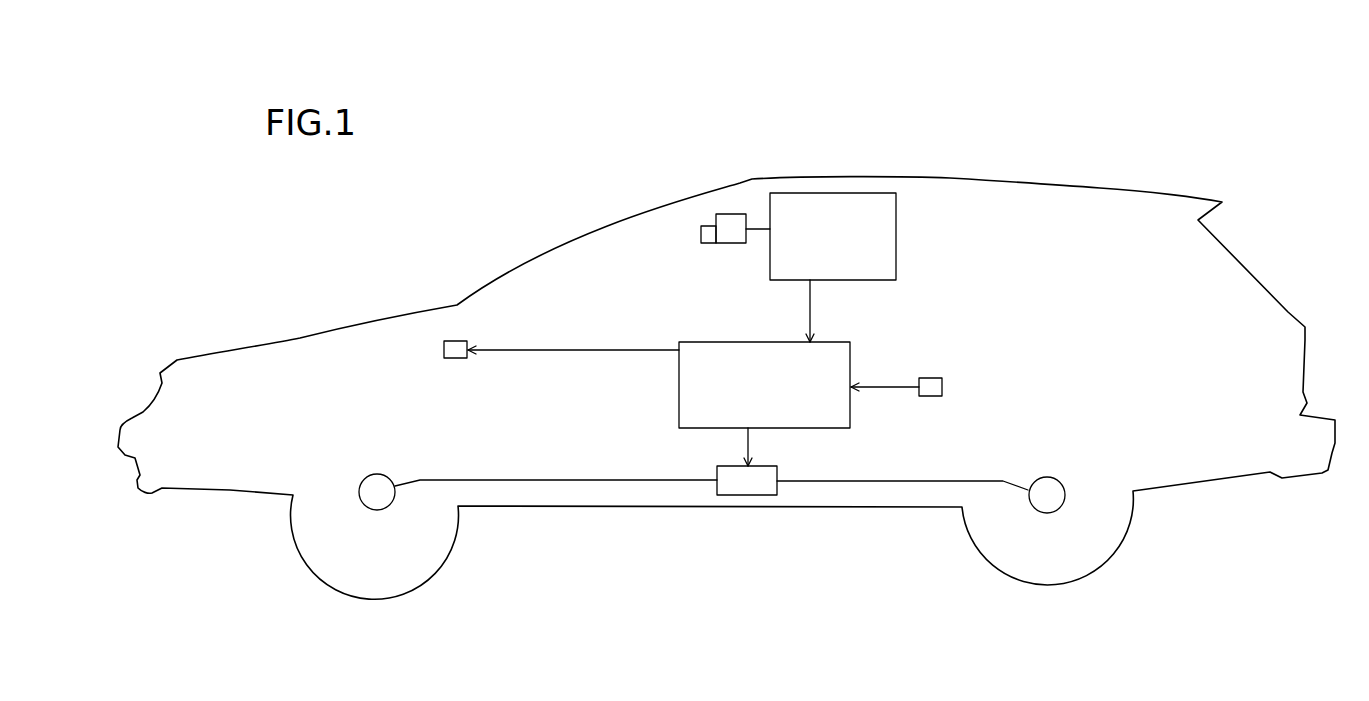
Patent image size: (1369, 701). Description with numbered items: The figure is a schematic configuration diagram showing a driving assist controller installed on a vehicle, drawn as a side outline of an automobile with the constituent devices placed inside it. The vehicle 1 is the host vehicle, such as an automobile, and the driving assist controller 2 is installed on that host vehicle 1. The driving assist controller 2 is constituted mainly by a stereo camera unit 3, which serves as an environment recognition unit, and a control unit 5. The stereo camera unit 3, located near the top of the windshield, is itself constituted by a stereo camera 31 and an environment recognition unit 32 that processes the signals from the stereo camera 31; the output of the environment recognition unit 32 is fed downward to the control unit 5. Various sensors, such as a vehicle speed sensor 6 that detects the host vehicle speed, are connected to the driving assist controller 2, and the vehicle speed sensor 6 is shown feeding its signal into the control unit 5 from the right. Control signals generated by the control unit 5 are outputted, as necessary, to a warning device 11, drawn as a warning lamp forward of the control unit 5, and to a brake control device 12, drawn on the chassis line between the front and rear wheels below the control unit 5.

The vehicle 1 is at (568, 98).
The driving assist controller 2 is at (1100, 215).
The stereo camera unit 3 is at (923, 205).
The stereo camera 31 is at (731, 214).
The environment recognition unit 32 is at (834, 193).
The control unit 5 is at (707, 342).
The vehicle speed sensor 6 is at (942, 387).
The warning device 11 is at (455, 341).
The brake control device 12 is at (745, 495).